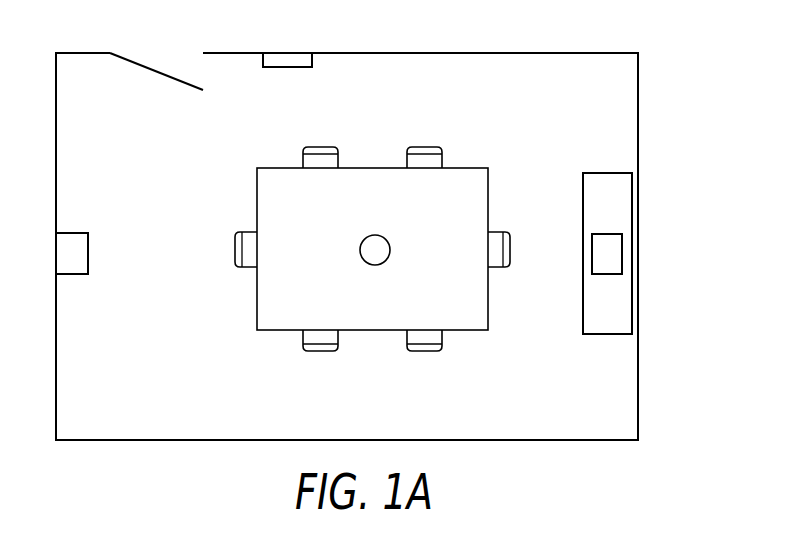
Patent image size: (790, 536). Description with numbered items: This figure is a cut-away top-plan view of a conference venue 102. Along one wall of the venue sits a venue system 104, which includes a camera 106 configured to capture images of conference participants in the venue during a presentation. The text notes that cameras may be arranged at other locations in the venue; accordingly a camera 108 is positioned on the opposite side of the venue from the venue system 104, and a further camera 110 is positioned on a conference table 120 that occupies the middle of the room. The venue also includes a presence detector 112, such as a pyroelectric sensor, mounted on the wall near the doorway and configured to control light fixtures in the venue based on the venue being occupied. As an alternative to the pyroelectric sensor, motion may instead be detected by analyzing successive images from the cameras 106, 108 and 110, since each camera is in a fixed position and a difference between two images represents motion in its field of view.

The venue 102 is at (600, 53).
The venue system 104 is at (594, 336).
The camera 106 is at (622, 254).
The camera 108 is at (81, 275).
The camera 110 is at (374, 266).
The presence detector 112 is at (298, 68).
The conference table 120 is at (257, 205).